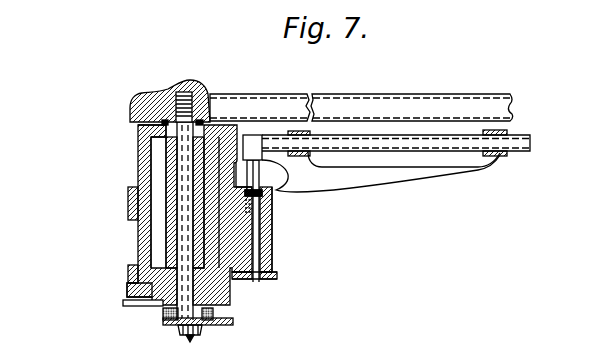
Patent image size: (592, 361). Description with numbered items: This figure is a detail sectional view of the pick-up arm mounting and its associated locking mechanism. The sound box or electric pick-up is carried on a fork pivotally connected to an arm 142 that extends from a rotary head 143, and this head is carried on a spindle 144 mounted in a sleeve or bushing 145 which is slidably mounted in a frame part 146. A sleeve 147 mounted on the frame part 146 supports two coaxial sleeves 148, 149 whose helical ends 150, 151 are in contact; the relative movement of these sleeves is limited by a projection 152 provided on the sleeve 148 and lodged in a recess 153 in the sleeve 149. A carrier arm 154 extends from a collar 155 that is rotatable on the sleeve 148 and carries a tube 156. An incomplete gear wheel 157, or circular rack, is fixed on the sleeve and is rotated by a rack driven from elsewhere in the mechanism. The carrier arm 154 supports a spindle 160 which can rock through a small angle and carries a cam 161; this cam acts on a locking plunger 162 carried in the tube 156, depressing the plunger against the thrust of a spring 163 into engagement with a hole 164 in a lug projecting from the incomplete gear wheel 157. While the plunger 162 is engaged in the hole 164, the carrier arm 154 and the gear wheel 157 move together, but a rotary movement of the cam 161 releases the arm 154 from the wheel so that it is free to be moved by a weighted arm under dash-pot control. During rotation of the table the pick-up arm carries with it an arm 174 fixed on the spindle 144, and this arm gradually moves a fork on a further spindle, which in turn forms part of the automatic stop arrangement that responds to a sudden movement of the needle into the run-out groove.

The arm 142 is at (305, 97).
The rotary head 143 is at (170, 84).
The spindle 144 is at (188, 241).
The sleeve or bushing 145 is at (133, 298).
The frame part 146 is at (133, 282).
The sleeve 147 is at (138, 215).
The sleeve 148 is at (129, 195).
The sleeve 149 is at (140, 133).
The helical end 150 is at (259, 210).
The helical end 151 is at (243, 134).
The projection 152 is at (150, 150).
The recess 153 is at (165, 161).
The carrier arm 154 is at (390, 170).
The collar 155 is at (268, 250).
The tube 156 is at (267, 232).
The incomplete gear wheel 157 is at (130, 270).
The spindle 160 is at (383, 137).
The cam 161 is at (249, 135).
The locking plunger 162 is at (273, 160).
The spring 163 is at (261, 200).
The hole 164 is at (261, 283).
The arm 174 is at (222, 326).